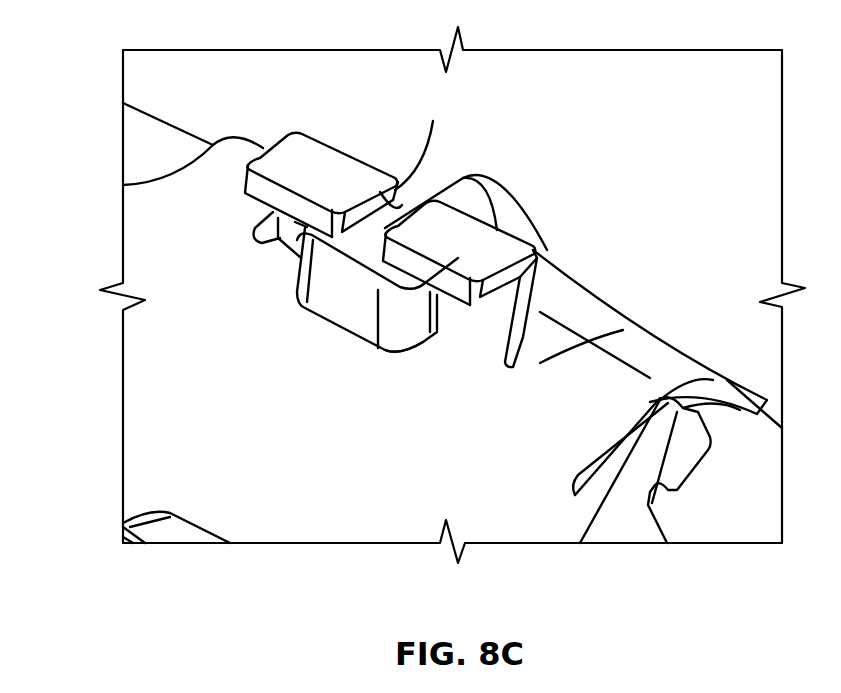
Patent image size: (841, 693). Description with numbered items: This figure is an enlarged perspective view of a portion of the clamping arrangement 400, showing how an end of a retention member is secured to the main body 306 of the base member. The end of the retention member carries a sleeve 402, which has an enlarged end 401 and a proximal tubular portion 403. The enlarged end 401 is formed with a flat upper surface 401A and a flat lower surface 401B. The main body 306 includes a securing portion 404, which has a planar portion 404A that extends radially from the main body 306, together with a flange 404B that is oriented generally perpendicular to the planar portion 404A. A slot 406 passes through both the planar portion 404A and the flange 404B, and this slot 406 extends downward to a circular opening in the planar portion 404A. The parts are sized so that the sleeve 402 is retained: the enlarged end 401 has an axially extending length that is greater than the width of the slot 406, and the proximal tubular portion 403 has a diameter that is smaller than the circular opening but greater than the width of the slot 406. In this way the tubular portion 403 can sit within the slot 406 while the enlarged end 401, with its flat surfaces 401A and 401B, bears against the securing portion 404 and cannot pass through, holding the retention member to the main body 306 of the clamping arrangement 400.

The main body 306 is at (183, 420).
The clamping arrangement 400 is at (633, 173).
The enlarged end 401 is at (331, 256).
The flat upper surface 401A is at (371, 243).
The flat lower surface 401B is at (397, 350).
The sleeve 402 is at (334, 304).
The proximal tubular portion 403 is at (460, 182).
The securing portion 404 is at (446, 266).
The planar portion 404A is at (540, 306).
The flange 404B is at (267, 163).
The slot 406 is at (374, 192).